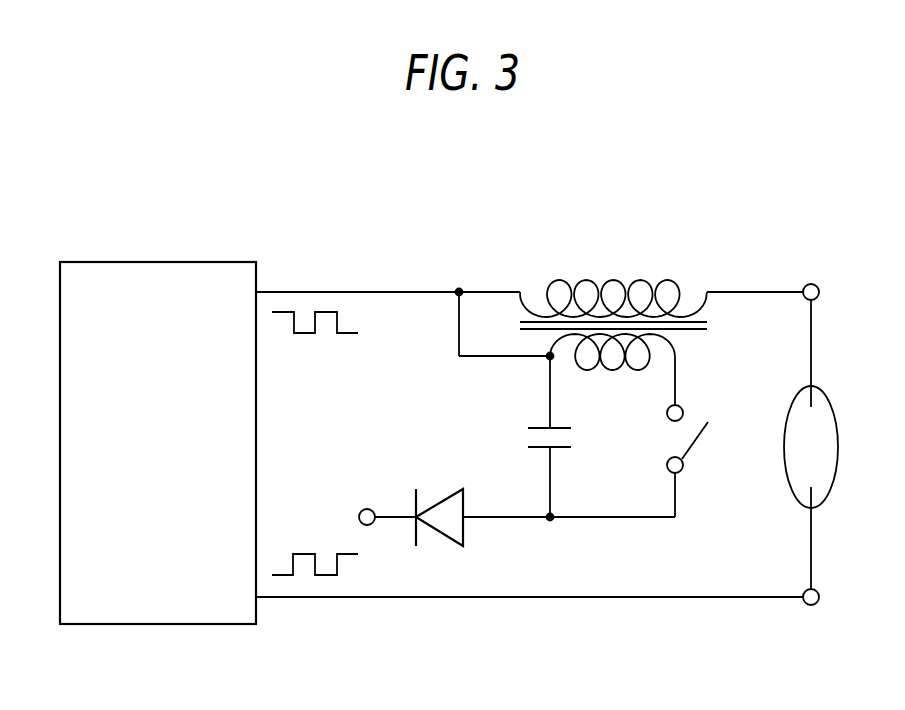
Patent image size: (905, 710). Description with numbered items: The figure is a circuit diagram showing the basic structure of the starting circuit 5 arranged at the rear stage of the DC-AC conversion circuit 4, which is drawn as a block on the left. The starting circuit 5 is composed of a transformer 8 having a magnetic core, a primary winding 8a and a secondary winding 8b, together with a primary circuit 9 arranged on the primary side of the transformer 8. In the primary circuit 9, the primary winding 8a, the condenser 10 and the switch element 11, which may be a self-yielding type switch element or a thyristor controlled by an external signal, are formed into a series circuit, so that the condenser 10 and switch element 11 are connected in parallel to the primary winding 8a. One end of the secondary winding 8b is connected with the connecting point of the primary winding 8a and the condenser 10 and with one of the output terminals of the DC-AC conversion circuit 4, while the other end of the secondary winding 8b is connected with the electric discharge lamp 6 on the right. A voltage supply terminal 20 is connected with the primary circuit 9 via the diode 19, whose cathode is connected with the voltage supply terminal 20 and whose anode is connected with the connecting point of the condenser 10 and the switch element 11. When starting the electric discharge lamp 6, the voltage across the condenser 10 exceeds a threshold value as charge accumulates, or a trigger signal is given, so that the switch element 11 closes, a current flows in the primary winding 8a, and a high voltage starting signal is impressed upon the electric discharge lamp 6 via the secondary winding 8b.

The DC-AC conversion circuit 4 is at (155, 262).
The starting circuit 5 is at (622, 293).
The electric discharge lamp 6 is at (831, 406).
The transformer 8 is at (738, 272).
The primary winding 8a is at (678, 340).
The secondary winding 8b is at (613, 282).
The primary circuit 9 is at (681, 532).
The condenser 10 is at (540, 449).
The switch element 11 is at (697, 438).
The diode 19 is at (452, 495).
The voltage supply terminal 20 is at (362, 510).